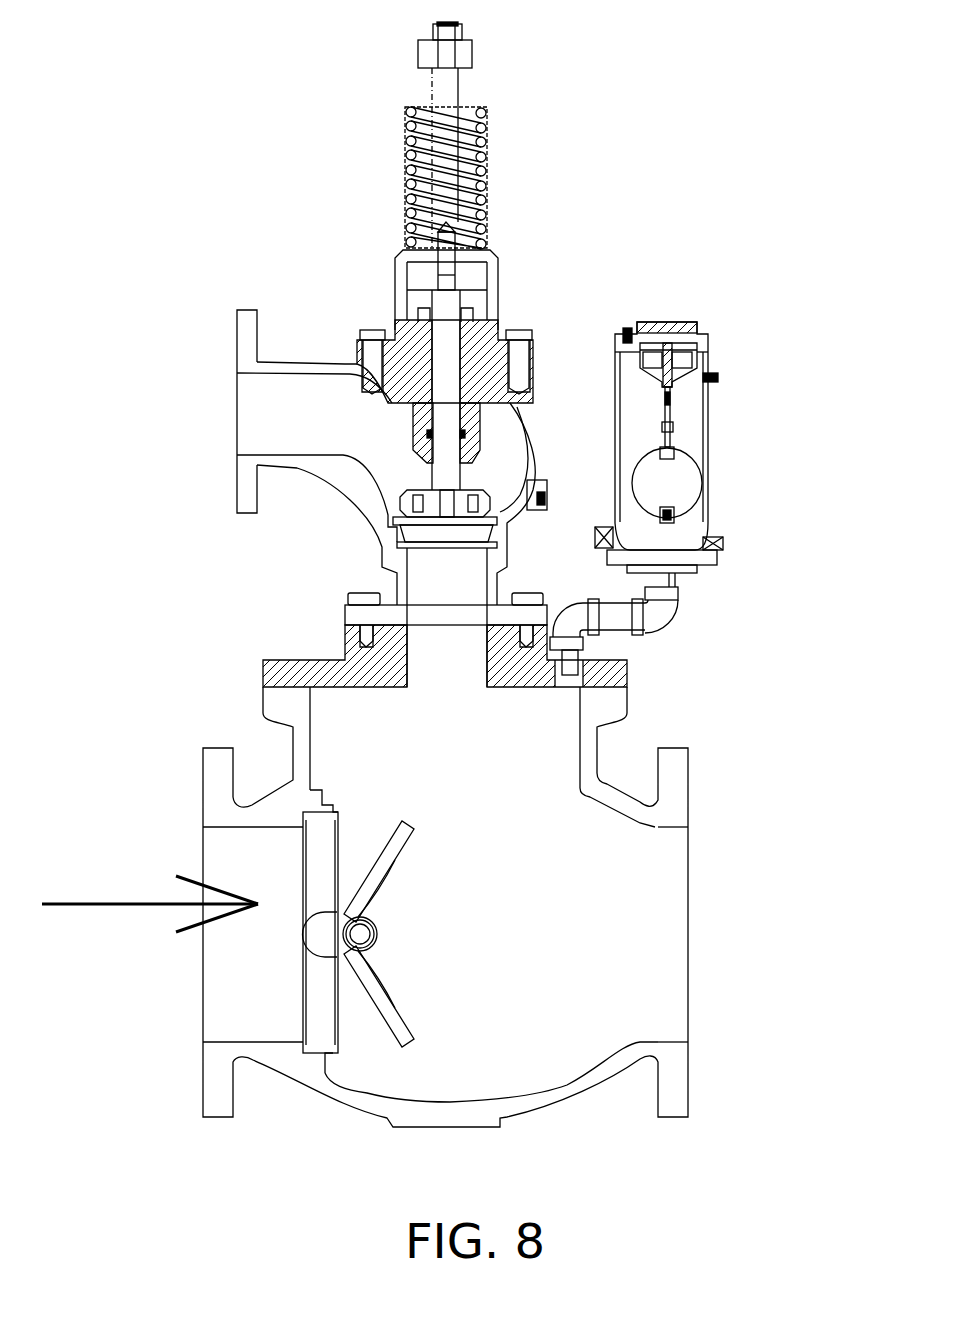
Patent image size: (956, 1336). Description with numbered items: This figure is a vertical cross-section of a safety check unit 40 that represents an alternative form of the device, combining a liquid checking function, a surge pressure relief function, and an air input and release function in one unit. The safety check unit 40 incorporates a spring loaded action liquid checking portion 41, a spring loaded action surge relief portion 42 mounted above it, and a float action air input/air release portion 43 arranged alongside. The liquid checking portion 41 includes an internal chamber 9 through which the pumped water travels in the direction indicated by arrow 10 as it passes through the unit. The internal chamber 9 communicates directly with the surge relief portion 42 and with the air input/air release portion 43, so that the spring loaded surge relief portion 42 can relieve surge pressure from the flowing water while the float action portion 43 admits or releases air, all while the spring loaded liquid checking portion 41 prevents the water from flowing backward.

The safety check unit 40 is at (229, 178).
The surge relief portion 42 is at (530, 268).
The air input/air release portion 43 is at (745, 500).
The liquid checking portion 41 is at (772, 852).
The internal chamber 9 is at (517, 870).
The arrow 10 is at (72, 905).